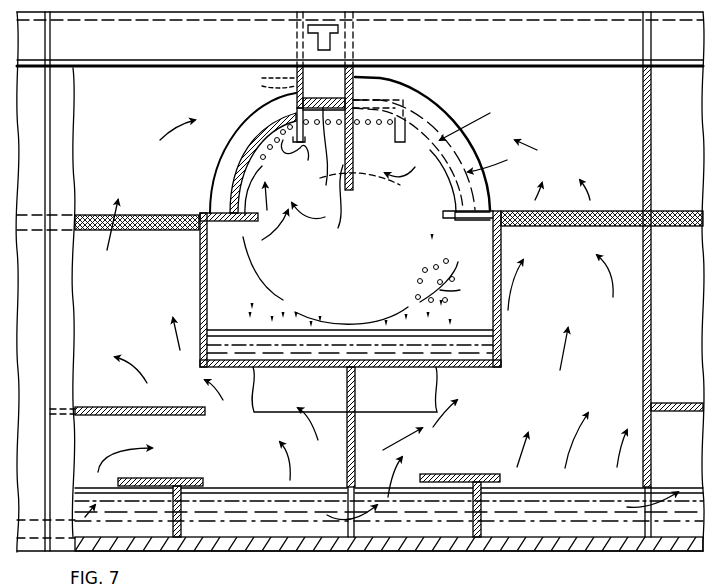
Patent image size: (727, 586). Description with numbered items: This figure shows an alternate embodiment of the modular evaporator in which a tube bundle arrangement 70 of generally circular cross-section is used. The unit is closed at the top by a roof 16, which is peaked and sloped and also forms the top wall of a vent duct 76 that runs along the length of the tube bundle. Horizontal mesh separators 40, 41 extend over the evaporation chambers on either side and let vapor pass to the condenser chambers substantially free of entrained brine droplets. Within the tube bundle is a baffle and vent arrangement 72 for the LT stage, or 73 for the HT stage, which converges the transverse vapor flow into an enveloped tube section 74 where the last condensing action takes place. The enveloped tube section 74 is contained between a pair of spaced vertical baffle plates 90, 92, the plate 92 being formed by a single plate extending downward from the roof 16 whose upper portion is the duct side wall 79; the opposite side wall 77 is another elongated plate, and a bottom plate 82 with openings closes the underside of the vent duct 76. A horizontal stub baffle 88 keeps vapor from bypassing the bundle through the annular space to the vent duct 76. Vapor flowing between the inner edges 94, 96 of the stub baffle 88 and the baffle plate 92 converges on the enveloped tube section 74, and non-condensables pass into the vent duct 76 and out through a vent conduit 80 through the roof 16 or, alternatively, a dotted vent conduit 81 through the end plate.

The roof 16 is at (590, 43).
The mesh separator 40 is at (137, 235).
The mesh separator 41 is at (612, 214).
The tube bundle arrangement 70 is at (483, 299).
The baffle and vent arrangement 72 is at (424, 199).
The baffle and vent arrangement 73 is at (351, 253).
The enveloped tube section 74 is at (240, 123).
The vent duct 76 is at (296, 83).
The duct side wall 77 is at (296, 62).
The duct side wall 79 is at (380, 76).
The vent conduit 80 is at (310, 34).
The vent conduit 81 is at (262, 83).
The bottom plate 82 is at (329, 156).
The stub baffle 88 is at (221, 226).
The vertical baffle plate 90 is at (290, 140).
The vertical baffle plate 92 is at (353, 150).
The inner edge 94 is at (262, 222).
The inner edge 96 is at (355, 190).